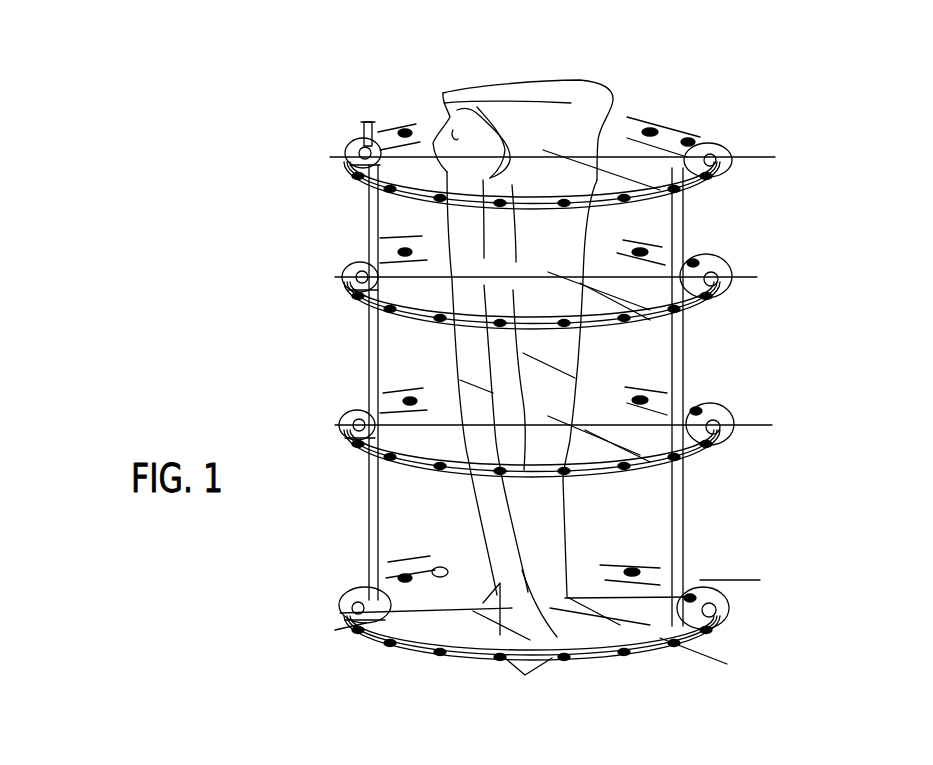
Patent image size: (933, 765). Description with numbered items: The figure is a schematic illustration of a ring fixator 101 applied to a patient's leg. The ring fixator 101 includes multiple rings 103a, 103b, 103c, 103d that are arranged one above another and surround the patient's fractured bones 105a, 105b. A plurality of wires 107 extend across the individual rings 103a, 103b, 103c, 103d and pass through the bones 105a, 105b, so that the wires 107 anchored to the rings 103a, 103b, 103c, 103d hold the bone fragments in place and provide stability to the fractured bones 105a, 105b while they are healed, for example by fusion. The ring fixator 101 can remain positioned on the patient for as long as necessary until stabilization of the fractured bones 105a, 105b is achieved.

The ring fixator 101 is at (343, 123).
The ring 103a is at (707, 141).
The ring 103b is at (722, 270).
The ring 103c is at (715, 410).
The ring 103d is at (700, 580).
The fractured bone 105a is at (442, 104).
The fractured bone 105b is at (524, 90).
The wires 107 is at (660, 186).